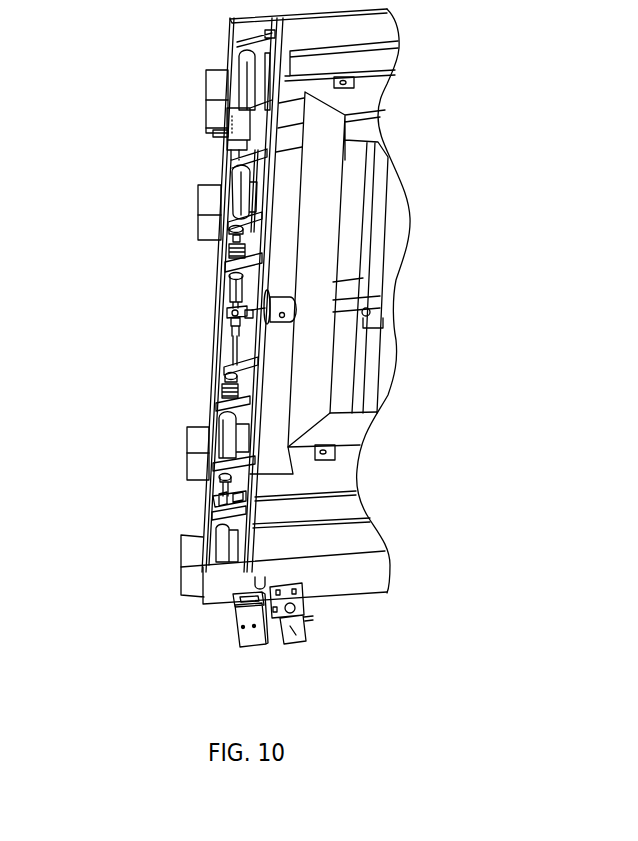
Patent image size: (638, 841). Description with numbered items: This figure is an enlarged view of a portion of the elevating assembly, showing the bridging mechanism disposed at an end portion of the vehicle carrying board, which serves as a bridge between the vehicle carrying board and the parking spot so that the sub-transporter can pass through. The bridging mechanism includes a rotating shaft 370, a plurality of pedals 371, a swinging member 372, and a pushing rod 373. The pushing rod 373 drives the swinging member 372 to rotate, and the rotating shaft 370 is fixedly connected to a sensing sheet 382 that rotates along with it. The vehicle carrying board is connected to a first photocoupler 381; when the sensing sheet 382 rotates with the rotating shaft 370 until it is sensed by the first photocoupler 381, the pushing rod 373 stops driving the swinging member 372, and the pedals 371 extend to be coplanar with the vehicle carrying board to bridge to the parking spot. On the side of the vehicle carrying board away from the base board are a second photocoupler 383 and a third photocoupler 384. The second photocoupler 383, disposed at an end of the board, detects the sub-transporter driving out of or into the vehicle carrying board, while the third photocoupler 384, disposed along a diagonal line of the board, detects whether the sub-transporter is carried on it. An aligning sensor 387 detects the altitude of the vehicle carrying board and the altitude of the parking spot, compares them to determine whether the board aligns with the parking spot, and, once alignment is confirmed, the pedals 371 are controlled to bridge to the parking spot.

The rotating shaft 370 is at (212, 290).
The pedals 371 is at (217, 115).
The swinging member 372 is at (213, 320).
The pushing rod 373 is at (277, 323).
The first photocoupler 381 is at (212, 497).
The sensing sheet 382 is at (213, 505).
The second photocoupler 383 is at (233, 630).
The third photocoupler 384 is at (290, 640).
The aligning sensor 387 is at (213, 133).